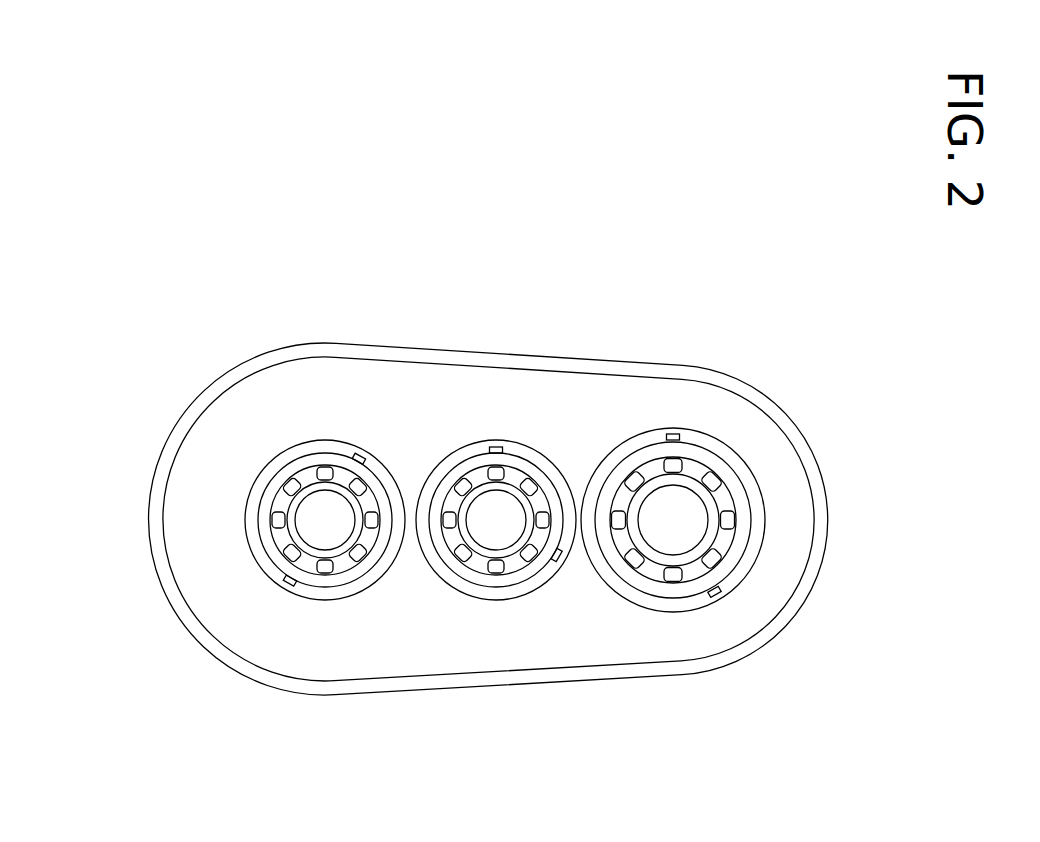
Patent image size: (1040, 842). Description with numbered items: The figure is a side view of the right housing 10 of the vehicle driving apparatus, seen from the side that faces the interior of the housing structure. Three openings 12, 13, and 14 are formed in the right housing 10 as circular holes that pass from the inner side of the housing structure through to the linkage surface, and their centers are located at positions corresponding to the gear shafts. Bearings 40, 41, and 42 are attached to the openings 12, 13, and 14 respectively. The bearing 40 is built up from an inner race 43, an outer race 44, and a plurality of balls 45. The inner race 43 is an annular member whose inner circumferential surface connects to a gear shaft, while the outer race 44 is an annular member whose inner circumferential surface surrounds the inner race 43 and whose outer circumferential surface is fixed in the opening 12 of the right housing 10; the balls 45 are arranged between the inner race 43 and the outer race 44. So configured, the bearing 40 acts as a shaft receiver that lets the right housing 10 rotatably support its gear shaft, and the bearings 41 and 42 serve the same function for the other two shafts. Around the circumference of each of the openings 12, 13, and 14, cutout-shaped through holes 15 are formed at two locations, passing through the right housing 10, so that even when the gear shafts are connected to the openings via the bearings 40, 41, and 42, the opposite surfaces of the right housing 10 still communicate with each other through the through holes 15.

The right housing 10 is at (179, 376).
The opening 12 is at (317, 452).
The opening 13 is at (473, 458).
The opening 14 is at (636, 440).
The through hole 15 is at (357, 455).
The bearing 40 is at (80, 562).
The bearing 41 is at (495, 575).
The bearing 42 is at (667, 587).
The inner race 43 is at (287, 520).
The outer race 44 is at (270, 549).
The balls 45 is at (290, 556).